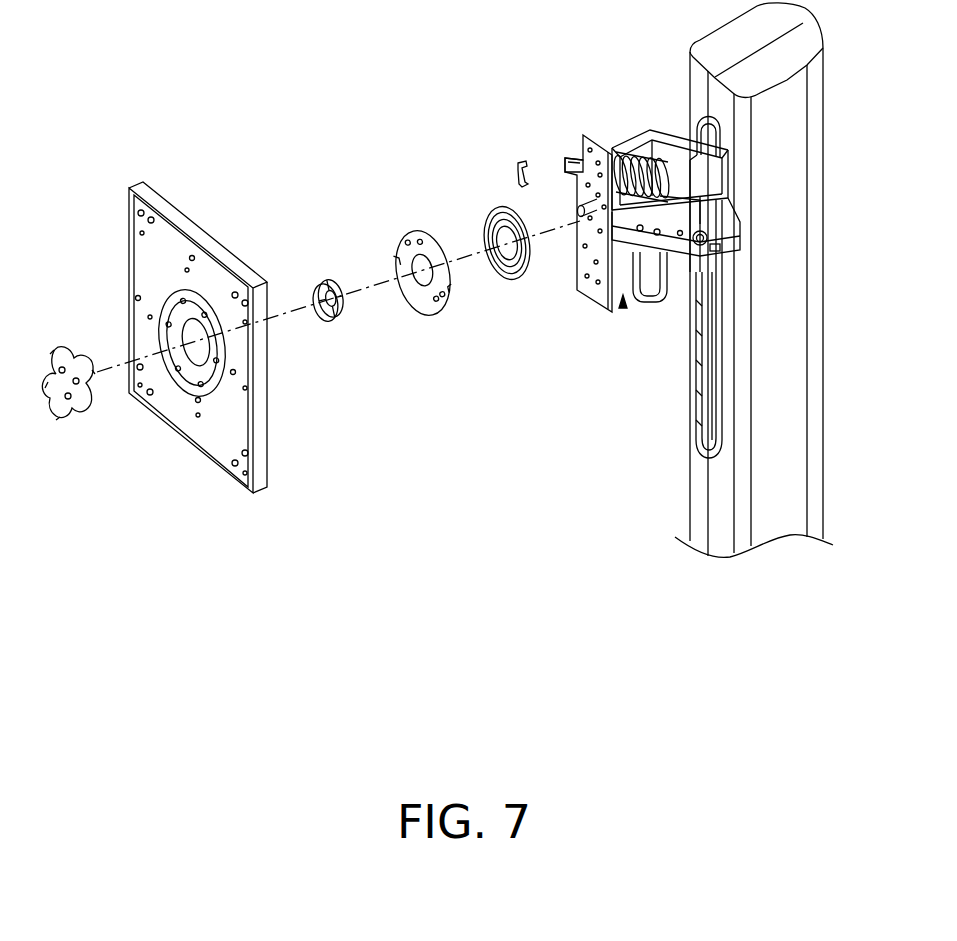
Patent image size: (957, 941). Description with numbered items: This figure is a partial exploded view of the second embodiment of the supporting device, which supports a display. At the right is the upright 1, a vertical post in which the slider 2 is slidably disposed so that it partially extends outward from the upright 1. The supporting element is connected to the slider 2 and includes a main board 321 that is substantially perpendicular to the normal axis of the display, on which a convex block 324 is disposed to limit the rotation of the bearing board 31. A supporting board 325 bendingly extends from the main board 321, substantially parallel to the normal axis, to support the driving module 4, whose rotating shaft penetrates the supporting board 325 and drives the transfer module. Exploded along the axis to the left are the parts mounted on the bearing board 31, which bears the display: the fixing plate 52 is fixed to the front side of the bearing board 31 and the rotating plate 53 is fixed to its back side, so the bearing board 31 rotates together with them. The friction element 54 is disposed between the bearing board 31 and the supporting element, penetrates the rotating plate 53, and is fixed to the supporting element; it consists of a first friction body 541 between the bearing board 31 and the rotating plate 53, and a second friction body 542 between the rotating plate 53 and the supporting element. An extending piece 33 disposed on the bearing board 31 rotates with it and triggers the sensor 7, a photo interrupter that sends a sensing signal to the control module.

The upright 1 is at (807, 263).
The slider 2 is at (657, 132).
The driving module 4 is at (623, 305).
The sensor 7 is at (578, 152).
The bearing board 31 is at (203, 267).
The extending piece 33 is at (520, 160).
The fixing plate 52 is at (72, 417).
The rotating plate 53 is at (432, 312).
The friction element 54 is at (322, 182).
The first friction body 541 is at (333, 282).
The second friction body 542 is at (492, 205).
The main board 321 is at (593, 292).
The convex block 324 is at (582, 207).
The supporting board 325 is at (647, 265).